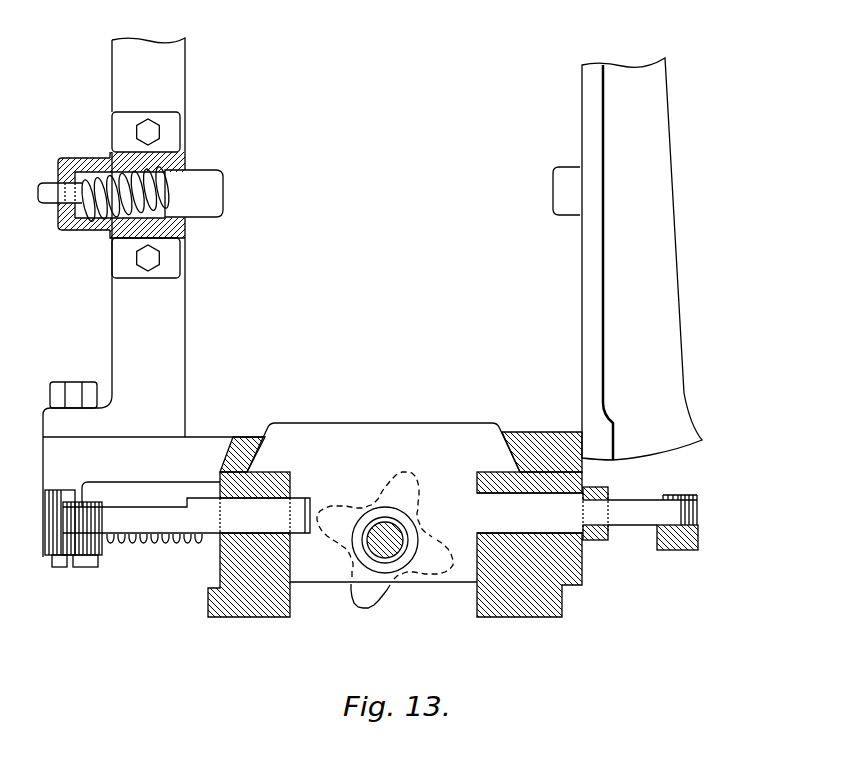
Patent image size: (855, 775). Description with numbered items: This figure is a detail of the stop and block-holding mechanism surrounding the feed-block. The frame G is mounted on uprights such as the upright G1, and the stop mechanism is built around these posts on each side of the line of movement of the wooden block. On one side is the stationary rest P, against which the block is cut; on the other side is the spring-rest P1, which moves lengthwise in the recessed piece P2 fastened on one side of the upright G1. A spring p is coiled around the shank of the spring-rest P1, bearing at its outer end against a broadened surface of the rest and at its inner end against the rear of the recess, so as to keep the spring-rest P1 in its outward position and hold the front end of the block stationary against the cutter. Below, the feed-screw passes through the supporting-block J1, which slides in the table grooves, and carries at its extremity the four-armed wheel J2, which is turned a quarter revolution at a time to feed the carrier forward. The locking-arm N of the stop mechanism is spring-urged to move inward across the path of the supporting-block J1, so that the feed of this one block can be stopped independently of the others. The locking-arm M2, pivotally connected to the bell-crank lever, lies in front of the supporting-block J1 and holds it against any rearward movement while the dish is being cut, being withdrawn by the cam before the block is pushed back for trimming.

The frame G is at (112, 95).
The upright G1 is at (672, 238).
The stationary rest P is at (553, 213).
The spring-rest P1 is at (224, 210).
The recessed piece P2 is at (84, 233).
The spring p is at (83, 172).
The supporting-block J1 is at (383, 487).
The four-armed wheel J2 is at (413, 482).
The locking-arm N is at (587, 518).
The locking-arm M2 is at (217, 527).